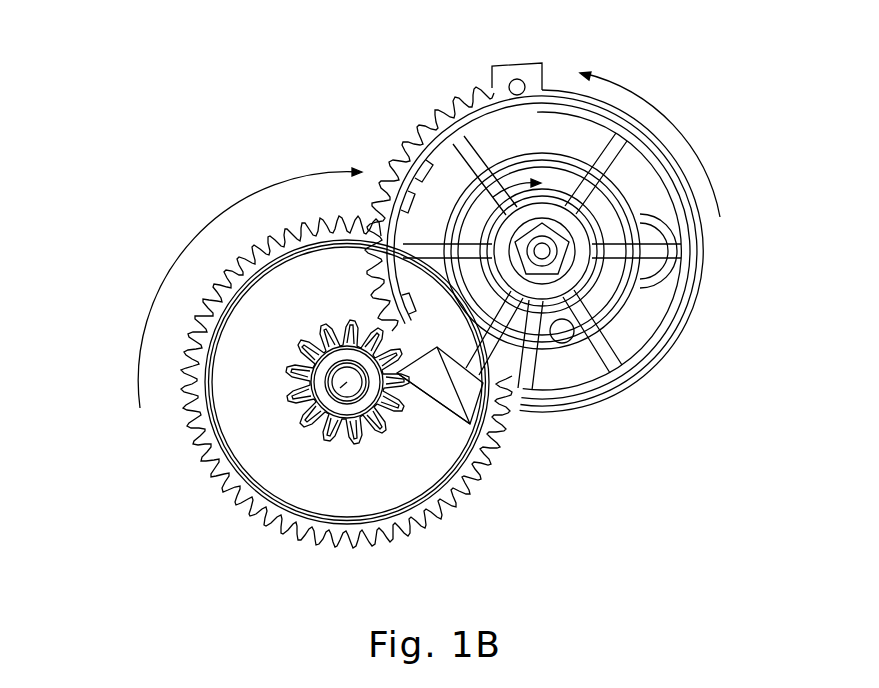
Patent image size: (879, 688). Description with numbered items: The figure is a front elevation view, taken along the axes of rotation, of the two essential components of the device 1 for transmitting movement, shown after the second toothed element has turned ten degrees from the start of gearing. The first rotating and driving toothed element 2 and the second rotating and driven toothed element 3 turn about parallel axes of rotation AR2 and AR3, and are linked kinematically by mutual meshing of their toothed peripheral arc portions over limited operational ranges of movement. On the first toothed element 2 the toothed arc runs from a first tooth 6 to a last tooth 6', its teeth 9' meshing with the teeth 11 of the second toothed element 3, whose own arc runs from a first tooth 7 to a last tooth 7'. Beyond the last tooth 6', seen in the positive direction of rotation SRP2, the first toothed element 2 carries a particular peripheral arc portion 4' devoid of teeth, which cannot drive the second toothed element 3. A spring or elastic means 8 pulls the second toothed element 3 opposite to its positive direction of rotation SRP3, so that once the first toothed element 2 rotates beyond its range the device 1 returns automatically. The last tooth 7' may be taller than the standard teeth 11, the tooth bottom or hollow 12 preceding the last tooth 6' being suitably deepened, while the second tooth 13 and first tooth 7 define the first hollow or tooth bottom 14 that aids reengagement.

The device for transmitting movement 1 is at (303, 147).
The first rotating and driving toothed element 2 is at (287, 414).
The second rotating and driven toothed element 3 is at (443, 82).
The particular peripheral arc portion 4' is at (527, 488).
The first tooth 6 is at (283, 314).
The last tooth 6' is at (428, 492).
The first tooth 7 is at (528, 450).
The last tooth 7' is at (427, 180).
The spring or elastic means 8 is at (543, 320).
The teeth 9' is at (224, 483).
The teeth 11 is at (393, 147).
The tooth bottom or hollow 12 is at (365, 434).
The second tooth 13 is at (378, 322).
The first hollow or tooth bottom 14 is at (495, 420).
The axis of rotation AR2 is at (332, 398).
The axis of rotation AR3 is at (543, 240).
The positive direction of rotation SRP2 is at (147, 323).
The positive direction of rotation SRP3 is at (700, 148).